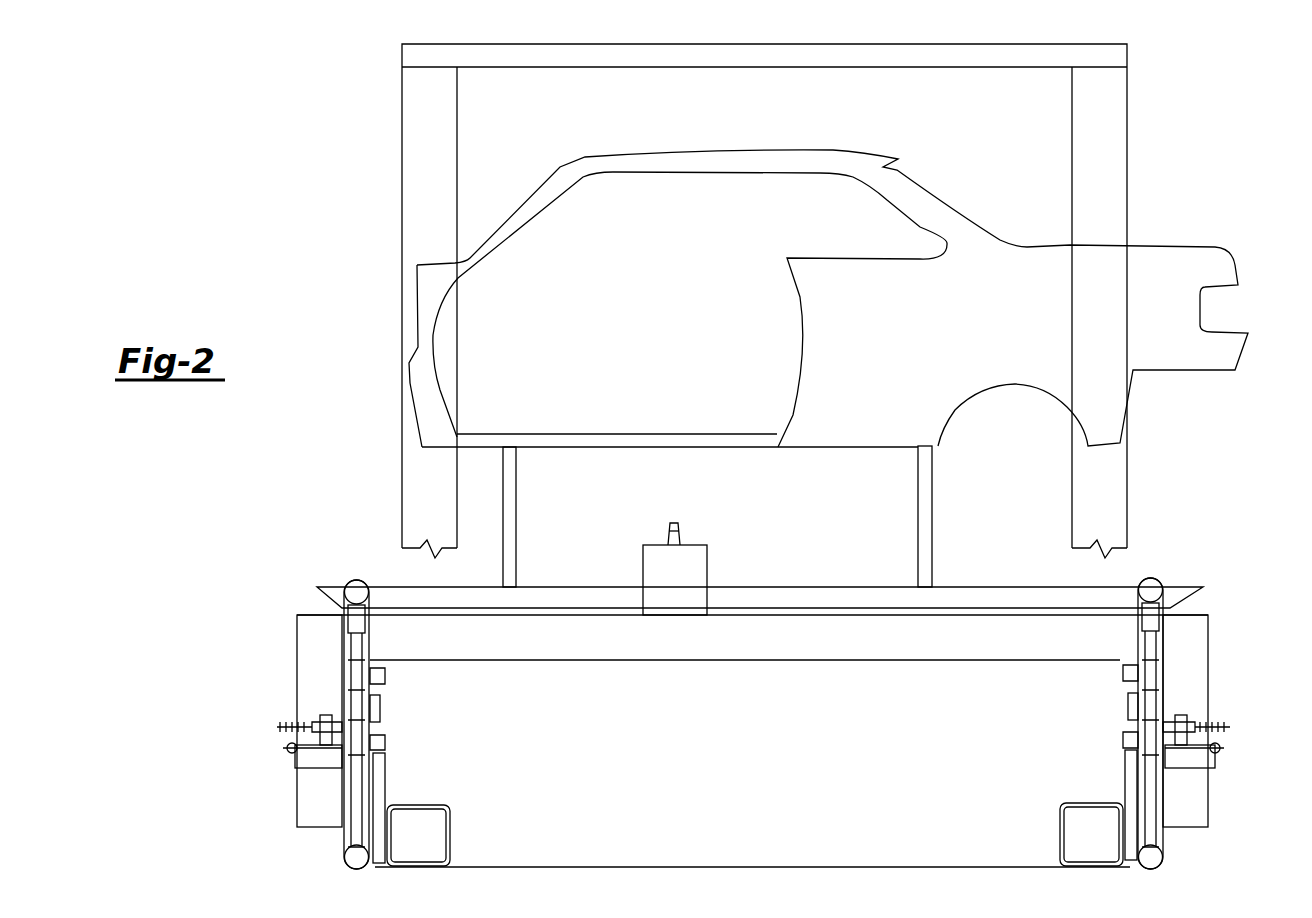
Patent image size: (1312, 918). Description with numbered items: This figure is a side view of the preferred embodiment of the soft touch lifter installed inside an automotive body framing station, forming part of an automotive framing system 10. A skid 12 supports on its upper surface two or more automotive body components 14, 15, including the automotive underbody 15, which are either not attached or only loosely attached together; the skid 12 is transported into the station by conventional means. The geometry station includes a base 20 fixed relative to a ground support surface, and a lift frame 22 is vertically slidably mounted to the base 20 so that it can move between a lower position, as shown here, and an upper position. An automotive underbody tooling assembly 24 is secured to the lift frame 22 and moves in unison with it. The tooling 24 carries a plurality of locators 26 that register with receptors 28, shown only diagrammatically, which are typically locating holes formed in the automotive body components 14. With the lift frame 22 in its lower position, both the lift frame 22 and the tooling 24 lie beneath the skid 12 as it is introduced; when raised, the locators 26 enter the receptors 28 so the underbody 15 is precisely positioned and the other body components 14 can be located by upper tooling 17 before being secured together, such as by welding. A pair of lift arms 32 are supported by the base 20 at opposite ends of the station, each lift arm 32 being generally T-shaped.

The automotive framing system 10 is at (1205, 150).
The skid 12 is at (1117, 593).
The automotive body component 14 is at (985, 258).
The automotive underbody 15 is at (722, 433).
The upper tooling 17 is at (1113, 136).
The base 20 is at (1075, 835).
The lift frame 22 is at (1188, 677).
The automotive underbody tooling assembly 24 is at (705, 566).
The locator 26 is at (671, 523).
The receptor 28 is at (667, 433).
The lift arm 32 is at (353, 616).